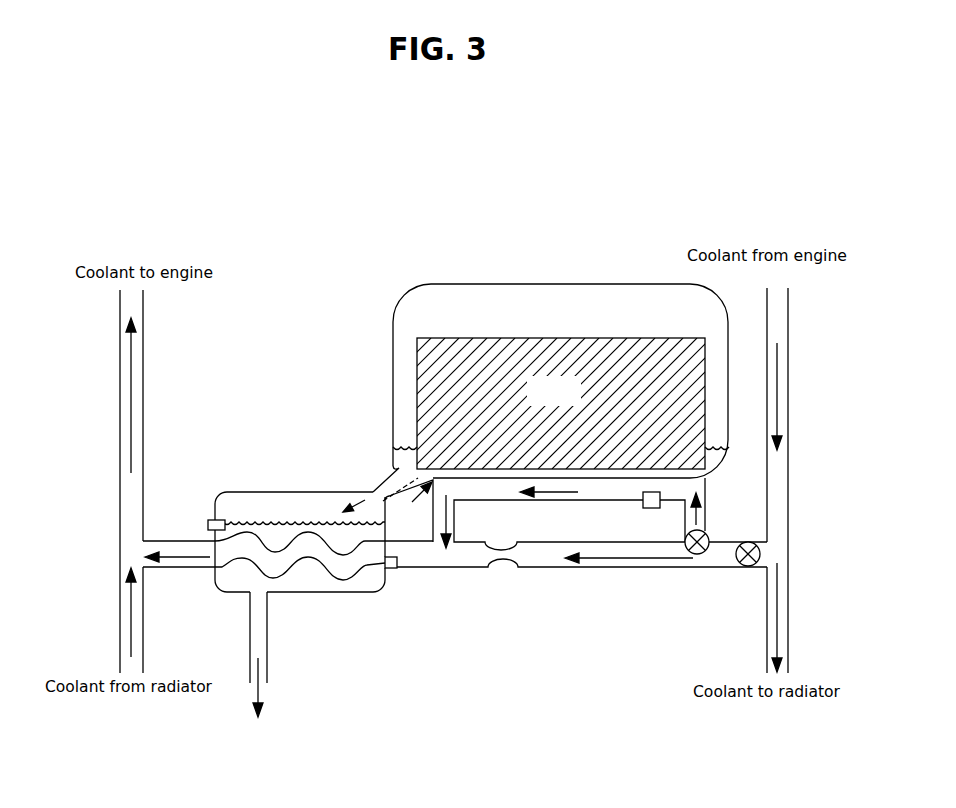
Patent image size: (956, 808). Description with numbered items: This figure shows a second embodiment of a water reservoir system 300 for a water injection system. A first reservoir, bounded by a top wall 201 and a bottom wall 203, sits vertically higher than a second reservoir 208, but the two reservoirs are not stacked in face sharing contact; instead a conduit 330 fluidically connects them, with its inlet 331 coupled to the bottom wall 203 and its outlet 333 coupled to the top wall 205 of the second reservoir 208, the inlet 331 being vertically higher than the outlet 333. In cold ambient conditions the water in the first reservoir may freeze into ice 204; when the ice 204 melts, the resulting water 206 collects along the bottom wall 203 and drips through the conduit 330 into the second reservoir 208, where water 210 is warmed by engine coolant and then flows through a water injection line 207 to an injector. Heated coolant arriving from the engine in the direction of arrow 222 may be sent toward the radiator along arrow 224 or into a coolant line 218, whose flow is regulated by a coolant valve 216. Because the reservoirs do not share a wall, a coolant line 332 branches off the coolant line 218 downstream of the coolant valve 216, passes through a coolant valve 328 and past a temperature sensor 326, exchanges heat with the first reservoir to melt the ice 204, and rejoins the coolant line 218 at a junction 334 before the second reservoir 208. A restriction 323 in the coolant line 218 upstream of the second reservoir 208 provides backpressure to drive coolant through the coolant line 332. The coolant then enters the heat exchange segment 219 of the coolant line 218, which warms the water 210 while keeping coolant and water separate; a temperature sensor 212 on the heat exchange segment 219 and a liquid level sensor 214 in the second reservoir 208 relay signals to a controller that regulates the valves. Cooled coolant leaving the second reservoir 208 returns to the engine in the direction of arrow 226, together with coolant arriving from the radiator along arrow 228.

The water reservoir system 300 is at (702, 117).
The top wall 201 is at (466, 276).
The bottom wall 203 is at (577, 283).
The ice 204 is at (571, 401).
The top wall 205 is at (247, 481).
The water 206 is at (692, 475).
The water injection line 207 is at (267, 660).
The second reservoir 208 is at (372, 592).
The water 210 is at (245, 522).
The temperature sensor 212 is at (390, 570).
The liquid level sensor 214 is at (213, 520).
The coolant valve 216 is at (745, 566).
The coolant line 218 is at (160, 568).
The heat exchange segment 219 is at (291, 572).
The arrow 222 is at (788, 425).
The arrow 224 is at (788, 577).
The arrow 226 is at (130, 425).
The arrow 228 is at (130, 604).
The restriction 323 is at (502, 568).
The temperature sensor 326 is at (643, 507).
The coolant valve 328 is at (694, 554).
The conduit 330 is at (377, 488).
The inlet 331 is at (400, 466).
The coolant line 332 is at (543, 497).
The outlet 333 is at (370, 491).
The junction 334 is at (466, 528).